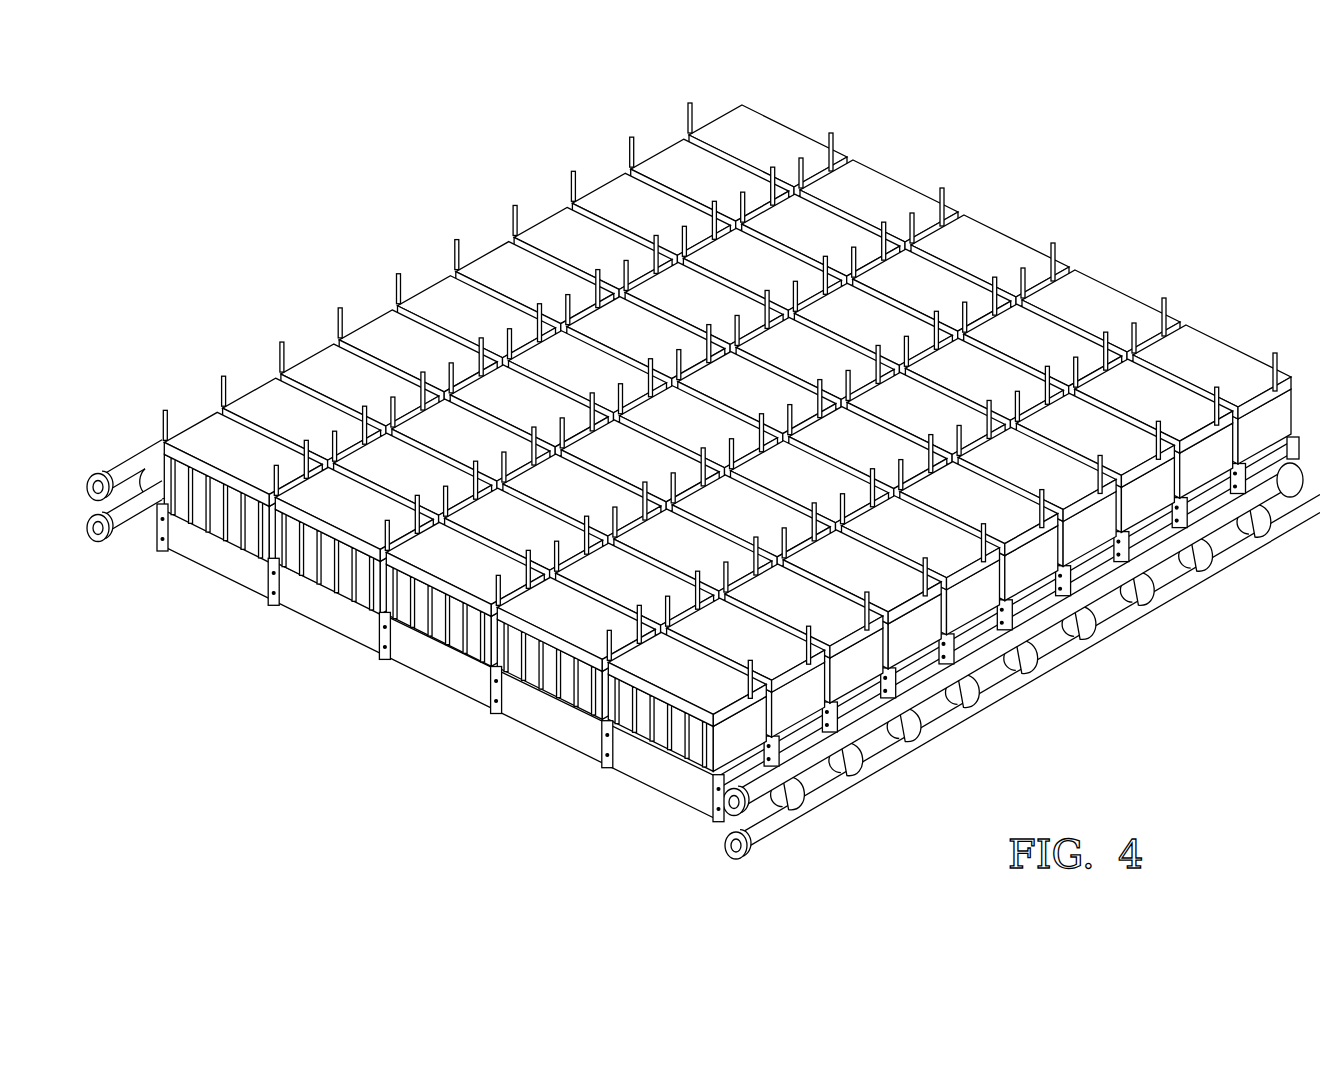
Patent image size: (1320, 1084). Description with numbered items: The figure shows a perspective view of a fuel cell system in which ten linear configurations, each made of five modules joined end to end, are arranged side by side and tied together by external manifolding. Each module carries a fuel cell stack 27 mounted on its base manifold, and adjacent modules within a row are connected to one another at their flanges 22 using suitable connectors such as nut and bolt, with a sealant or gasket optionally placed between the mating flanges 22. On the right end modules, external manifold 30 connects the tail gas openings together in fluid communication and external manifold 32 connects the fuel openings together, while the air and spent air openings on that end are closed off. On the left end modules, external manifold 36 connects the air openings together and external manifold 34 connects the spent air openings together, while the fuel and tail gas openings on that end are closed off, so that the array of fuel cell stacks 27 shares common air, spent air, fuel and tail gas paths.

The flanges 22 is at (158, 545).
The fuel cell stack 27 is at (768, 141).
The external manifold 30 is at (722, 806).
The external manifold 32 is at (726, 850).
The external manifold 34 is at (88, 488).
The external manifold 36 is at (90, 534).